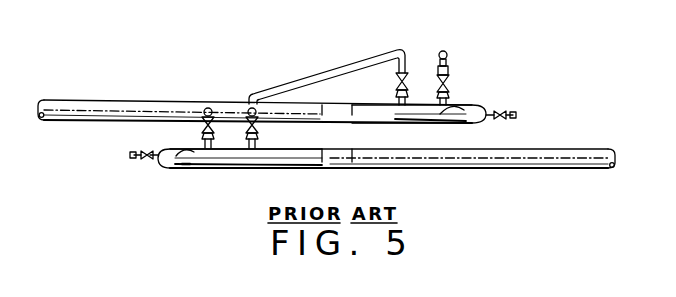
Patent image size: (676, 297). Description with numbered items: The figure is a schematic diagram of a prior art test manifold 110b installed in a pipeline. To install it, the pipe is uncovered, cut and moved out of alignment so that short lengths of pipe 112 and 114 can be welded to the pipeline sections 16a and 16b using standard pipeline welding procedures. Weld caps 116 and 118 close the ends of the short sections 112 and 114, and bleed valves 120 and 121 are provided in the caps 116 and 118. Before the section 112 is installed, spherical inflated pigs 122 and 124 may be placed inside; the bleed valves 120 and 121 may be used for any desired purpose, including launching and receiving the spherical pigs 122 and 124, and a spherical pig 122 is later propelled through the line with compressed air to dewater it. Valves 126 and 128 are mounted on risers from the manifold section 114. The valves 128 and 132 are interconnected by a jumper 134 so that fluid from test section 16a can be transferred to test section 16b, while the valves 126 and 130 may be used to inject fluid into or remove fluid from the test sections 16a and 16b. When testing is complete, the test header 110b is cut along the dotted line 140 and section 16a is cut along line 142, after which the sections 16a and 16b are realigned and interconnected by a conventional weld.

The test section 16a is at (129, 100).
The test section 16b is at (527, 172).
The test manifold 110b is at (291, 72).
The short length of pipe 112 is at (366, 106).
The short length of pipe 114 is at (300, 169).
The weld cap 116 is at (486, 105).
The weld cap 118 is at (160, 163).
The bleed valve 120 is at (500, 120).
The bleed valve 121 is at (135, 153).
The spherical pig 122 is at (447, 107).
The spherical pig 124 is at (182, 166).
The valve 126 is at (447, 80).
The valve 128 is at (407, 76).
The valve 130 is at (204, 123).
The valve 132 is at (259, 123).
The jumper 134 is at (325, 79).
The dotted line 140 is at (330, 169).
The line 142 is at (323, 112).